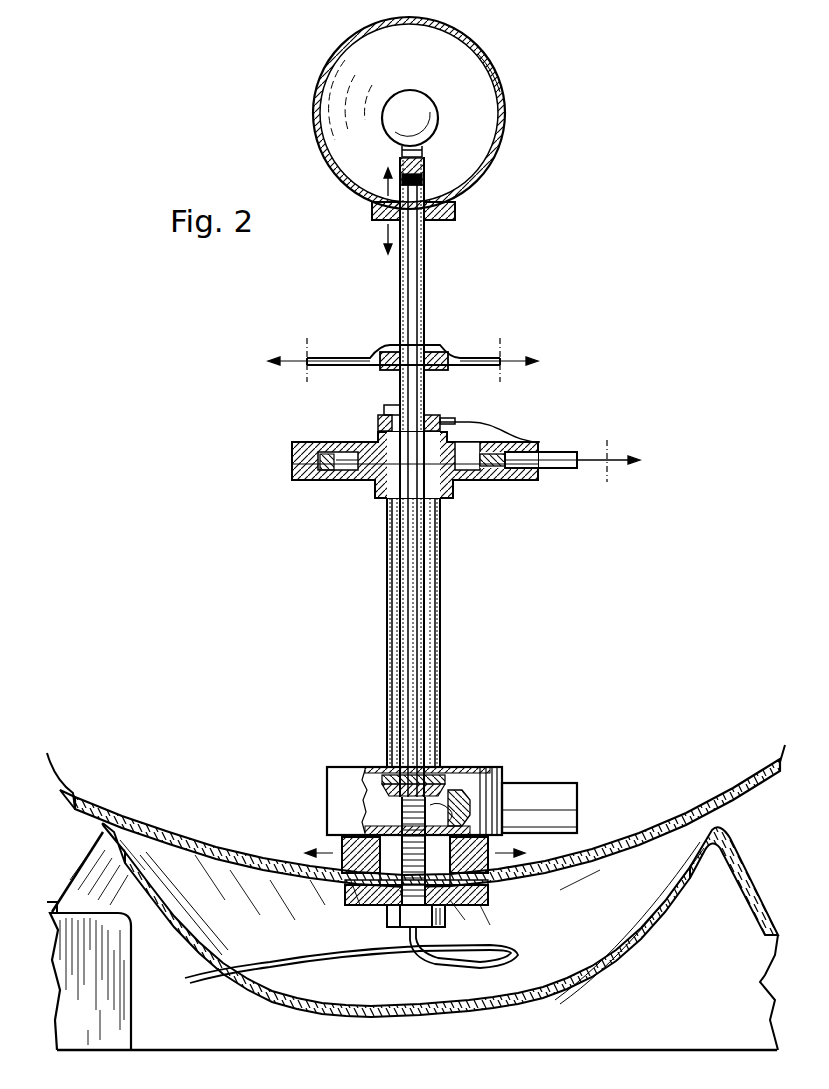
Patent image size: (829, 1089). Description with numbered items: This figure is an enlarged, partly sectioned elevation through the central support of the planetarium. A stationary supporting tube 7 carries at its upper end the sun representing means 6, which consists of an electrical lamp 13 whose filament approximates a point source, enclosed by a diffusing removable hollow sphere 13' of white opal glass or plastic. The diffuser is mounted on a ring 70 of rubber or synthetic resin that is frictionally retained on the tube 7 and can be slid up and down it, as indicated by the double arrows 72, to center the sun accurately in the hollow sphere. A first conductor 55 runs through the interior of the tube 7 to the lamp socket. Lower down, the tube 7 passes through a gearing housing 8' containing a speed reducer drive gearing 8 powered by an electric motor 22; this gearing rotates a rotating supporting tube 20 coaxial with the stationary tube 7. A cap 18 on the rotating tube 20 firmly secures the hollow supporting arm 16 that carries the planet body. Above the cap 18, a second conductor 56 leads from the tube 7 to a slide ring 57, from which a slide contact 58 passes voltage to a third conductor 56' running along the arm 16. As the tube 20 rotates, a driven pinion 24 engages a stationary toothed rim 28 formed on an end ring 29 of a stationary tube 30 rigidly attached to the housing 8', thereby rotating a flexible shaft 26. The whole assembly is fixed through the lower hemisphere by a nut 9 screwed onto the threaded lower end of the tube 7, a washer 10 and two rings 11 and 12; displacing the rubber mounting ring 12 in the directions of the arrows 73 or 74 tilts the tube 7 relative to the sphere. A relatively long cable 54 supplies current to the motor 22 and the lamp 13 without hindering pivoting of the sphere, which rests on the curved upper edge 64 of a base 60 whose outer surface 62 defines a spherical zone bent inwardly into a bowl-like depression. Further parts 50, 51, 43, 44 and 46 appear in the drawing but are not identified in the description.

The sun representing means 6 is at (318, 115).
The removable hollow sphere 13' is at (511, 73).
The electrical lamp 13 is at (465, 123).
The ring 70 is at (455, 214).
The double arrows 72 is at (382, 236).
The first conductor 55 is at (425, 242).
The stationary supporting tube 7 is at (425, 280).
The lever arm 50 is at (338, 356).
The lever arm 51 is at (462, 356).
The lever end 43 is at (340, 366).
The lever end 44 is at (484, 366).
The hub 46 is at (436, 370).
The second conductor 56 is at (377, 406).
The slide ring 57 is at (378, 426).
The slide contact 58 is at (455, 420).
The third conductor 56' is at (513, 425).
The cap 18 is at (292, 450).
The stationary toothed rim 28 is at (320, 472).
The end ring 29 is at (340, 480).
The driven pinion 24 is at (502, 478).
The supporting arm 16 is at (562, 470).
The flexible shaft 26 is at (606, 470).
The rotating supporting tube 20 is at (423, 584).
The stationary tube 30 is at (438, 641).
The speed reducer drive gearing 8 is at (456, 779).
The electric motor 22 is at (545, 783).
The gearing housing 8' is at (399, 801).
The ring 12 is at (340, 840).
The arrow 73 is at (342, 876).
The arrow 74 is at (500, 876).
The ring 11 is at (348, 906).
The washer 10 is at (378, 905).
The nut 9 is at (445, 918).
The cable 54 is at (516, 958).
The upper edge 64 is at (700, 835).
The outer surface 62 is at (745, 880).
The base 60 is at (725, 1016).